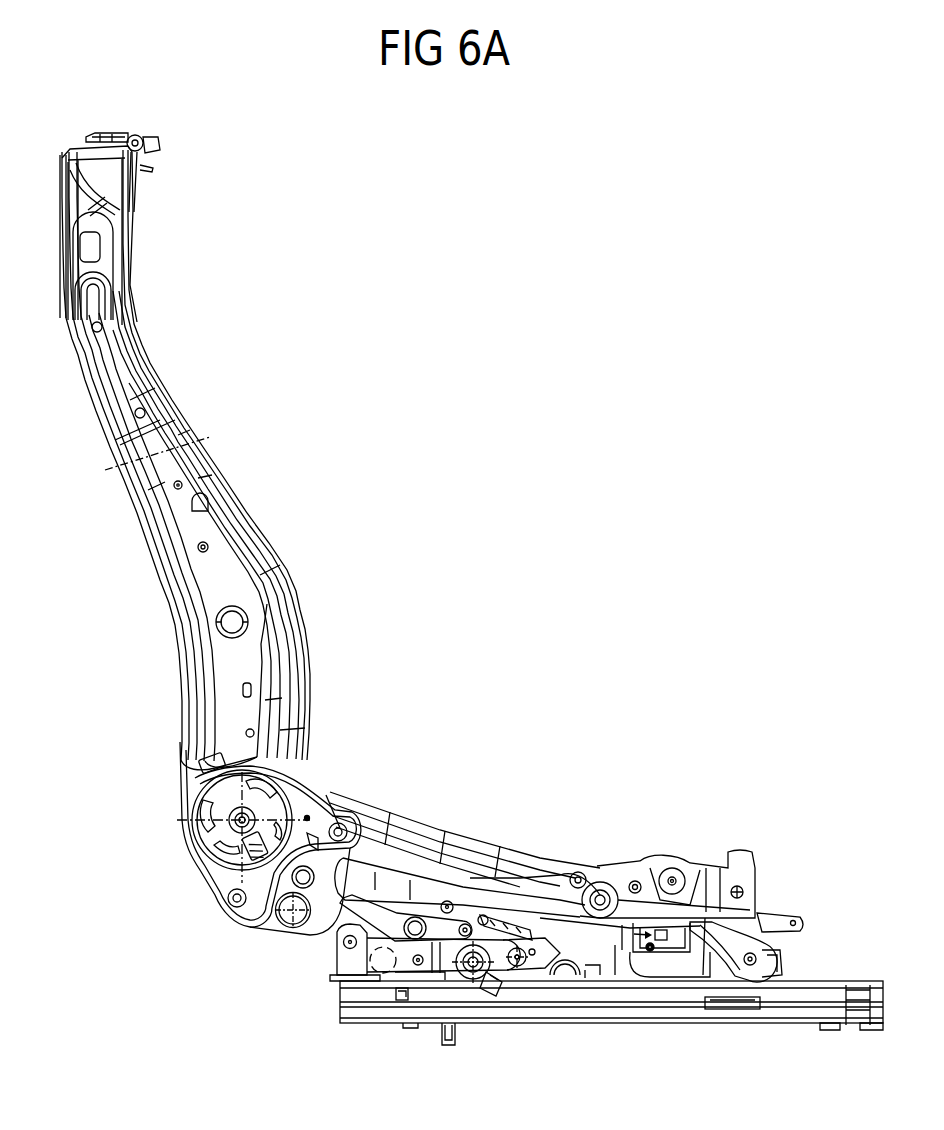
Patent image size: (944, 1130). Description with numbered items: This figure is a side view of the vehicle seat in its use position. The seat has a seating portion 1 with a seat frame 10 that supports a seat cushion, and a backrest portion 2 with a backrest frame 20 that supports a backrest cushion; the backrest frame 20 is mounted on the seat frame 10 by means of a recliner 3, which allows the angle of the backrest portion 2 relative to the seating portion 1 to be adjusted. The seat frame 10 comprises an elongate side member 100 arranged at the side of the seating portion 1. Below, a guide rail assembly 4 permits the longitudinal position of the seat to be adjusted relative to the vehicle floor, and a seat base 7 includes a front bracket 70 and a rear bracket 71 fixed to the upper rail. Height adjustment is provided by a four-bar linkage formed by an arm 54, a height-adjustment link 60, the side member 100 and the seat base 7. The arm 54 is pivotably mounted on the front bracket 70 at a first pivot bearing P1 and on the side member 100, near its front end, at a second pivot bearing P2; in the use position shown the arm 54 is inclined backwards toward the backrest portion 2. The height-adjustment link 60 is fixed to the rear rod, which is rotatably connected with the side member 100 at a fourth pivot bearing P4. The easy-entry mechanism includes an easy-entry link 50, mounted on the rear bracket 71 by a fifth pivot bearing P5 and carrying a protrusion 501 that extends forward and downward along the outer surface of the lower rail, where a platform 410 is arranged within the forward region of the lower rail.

The seating portion 1 is at (478, 796).
The backrest portion 2 is at (270, 495).
The recliner 3 is at (194, 881).
The guide rail assembly 4 is at (322, 1001).
The seat base 7 is at (808, 968).
The seat frame 10 is at (421, 810).
The backrest frame 20 is at (290, 557).
The easy-entry link 50 is at (436, 958).
The arm 54 is at (727, 944).
The height-adjustment link 60 is at (345, 922).
The front bracket 70 is at (682, 968).
The rear bracket 71 is at (353, 962).
The side member 100 is at (550, 885).
The platform 410 is at (712, 1002).
The protrusion 501 is at (483, 978).
The first pivot bearing P1 is at (758, 957).
The second pivot bearing P2 is at (674, 868).
The fourth pivot bearing P4 is at (280, 917).
The fifth pivot bearing P5 is at (476, 979).